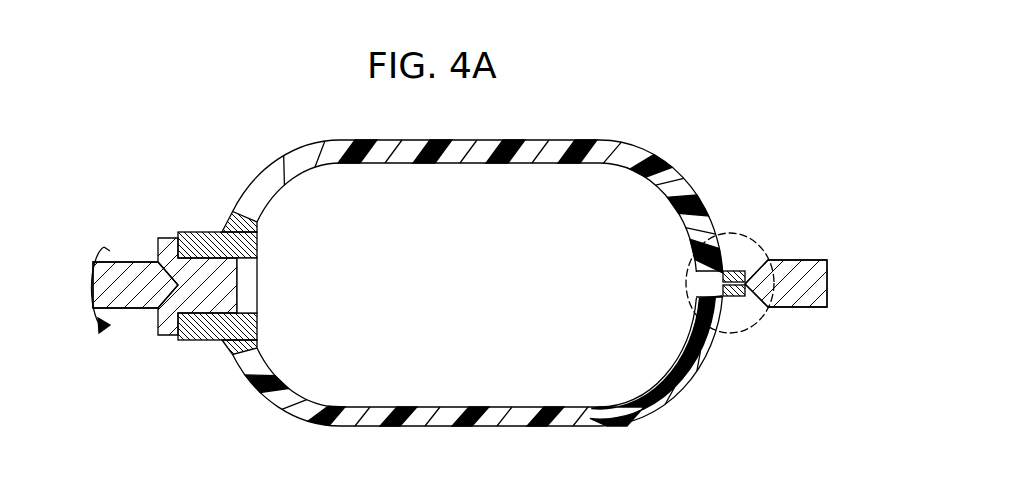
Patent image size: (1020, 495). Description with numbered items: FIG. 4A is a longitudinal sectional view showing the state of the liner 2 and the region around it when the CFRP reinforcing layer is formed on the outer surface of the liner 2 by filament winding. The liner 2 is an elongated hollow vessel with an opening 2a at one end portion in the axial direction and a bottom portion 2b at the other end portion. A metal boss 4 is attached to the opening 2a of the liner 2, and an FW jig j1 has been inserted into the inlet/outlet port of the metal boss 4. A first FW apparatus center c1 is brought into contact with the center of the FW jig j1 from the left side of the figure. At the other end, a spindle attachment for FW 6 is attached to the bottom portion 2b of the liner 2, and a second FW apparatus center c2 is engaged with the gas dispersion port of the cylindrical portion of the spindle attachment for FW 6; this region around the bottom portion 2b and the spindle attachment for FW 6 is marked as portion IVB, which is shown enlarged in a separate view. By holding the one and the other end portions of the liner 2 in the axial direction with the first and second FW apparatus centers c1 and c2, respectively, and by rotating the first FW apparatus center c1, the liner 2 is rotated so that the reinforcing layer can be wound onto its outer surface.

The liner 2 is at (545, 138).
The opening 2a is at (258, 236).
The bottom portion 2b is at (690, 287).
The metal boss 4 is at (208, 229).
The spindle attachment for FW 6 is at (738, 268).
The first FW apparatus center c1 is at (140, 264).
The second FW apparatus center c2 is at (807, 258).
The FW jig j1 is at (167, 323).
The portion IVB is at (752, 336).